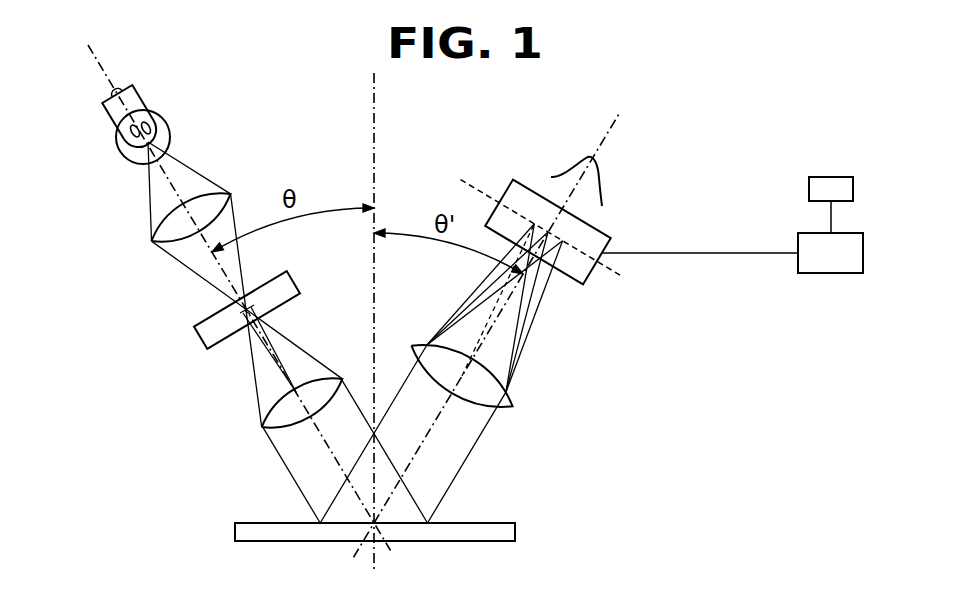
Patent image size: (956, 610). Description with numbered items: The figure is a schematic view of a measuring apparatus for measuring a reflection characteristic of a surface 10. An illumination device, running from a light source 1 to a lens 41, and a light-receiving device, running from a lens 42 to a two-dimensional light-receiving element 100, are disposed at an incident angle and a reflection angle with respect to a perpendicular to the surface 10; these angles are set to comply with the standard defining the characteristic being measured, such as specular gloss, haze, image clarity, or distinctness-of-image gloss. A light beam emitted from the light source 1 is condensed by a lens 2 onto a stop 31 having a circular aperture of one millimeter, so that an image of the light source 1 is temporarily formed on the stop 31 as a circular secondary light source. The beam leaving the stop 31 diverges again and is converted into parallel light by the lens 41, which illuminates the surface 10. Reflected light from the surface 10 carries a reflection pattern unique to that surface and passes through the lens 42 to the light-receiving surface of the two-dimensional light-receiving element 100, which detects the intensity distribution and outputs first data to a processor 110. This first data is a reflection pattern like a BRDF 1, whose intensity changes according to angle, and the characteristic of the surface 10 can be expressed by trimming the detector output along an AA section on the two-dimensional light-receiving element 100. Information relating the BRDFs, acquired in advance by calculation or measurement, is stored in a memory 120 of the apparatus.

The light source 1 is at (116, 143).
The lens 2 is at (152, 225).
The stop 31 is at (198, 338).
The lens 41 is at (268, 407).
The lens 42 is at (514, 402).
The surface 10 is at (484, 521).
The two-dimensional light-receiving element 100 is at (592, 283).
The processor 110 is at (831, 274).
The memory 120 is at (831, 177).
The AA section AA is at (535, 211).
The BRDF 1 BRDF1 is at (557, 172).